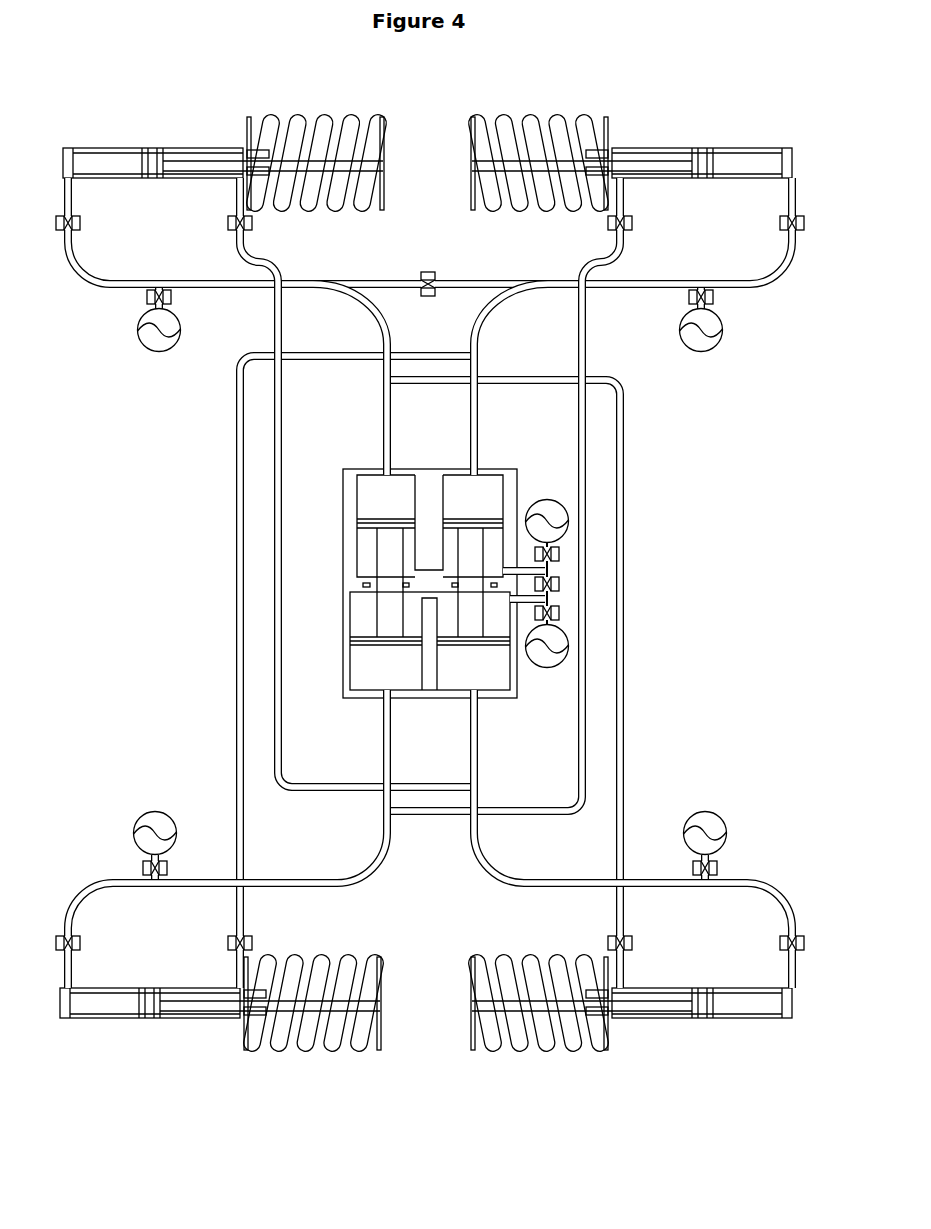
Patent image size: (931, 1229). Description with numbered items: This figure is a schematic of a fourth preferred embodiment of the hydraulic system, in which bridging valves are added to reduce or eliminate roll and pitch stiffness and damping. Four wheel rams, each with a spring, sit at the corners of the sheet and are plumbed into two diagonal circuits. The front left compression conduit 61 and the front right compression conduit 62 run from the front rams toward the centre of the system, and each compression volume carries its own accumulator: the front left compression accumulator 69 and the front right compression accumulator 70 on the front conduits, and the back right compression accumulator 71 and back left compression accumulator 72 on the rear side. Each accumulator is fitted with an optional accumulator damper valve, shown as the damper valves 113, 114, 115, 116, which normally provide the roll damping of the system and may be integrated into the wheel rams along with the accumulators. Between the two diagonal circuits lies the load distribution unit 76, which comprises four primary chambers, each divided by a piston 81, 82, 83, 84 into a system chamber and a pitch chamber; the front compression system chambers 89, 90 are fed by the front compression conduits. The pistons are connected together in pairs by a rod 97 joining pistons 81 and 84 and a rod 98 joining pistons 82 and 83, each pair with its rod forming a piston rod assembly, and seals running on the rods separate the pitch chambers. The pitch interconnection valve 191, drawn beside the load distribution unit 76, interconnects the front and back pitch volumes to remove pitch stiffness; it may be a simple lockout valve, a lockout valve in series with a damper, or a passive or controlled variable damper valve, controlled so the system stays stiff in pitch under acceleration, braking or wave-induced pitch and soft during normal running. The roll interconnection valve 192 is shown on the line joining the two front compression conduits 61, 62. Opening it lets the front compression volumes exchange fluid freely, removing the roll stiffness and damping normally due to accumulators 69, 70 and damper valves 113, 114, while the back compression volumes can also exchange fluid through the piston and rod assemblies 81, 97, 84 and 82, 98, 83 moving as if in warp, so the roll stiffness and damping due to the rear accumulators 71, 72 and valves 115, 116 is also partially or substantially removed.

The front left compression conduit 61 is at (307, 288).
The front right compression conduit 62 is at (552, 290).
The front left compression accumulator 69 is at (147, 350).
The front right compression accumulator 70 is at (717, 347).
The back right compression accumulator 71 is at (713, 815).
The back left compression accumulator 72 is at (147, 815).
The load distribution unit 76 is at (335, 437).
The piston 81 is at (365, 517).
The piston 82 is at (493, 517).
The piston 83 is at (495, 648).
The piston 84 is at (357, 650).
The system chamber 89 is at (378, 483).
The system chamber 90 is at (478, 483).
The rod 97 is at (377, 558).
The rod 98 is at (483, 560).
The accumulator damper valve 113 is at (145, 304).
The accumulator damper valve 114 is at (712, 302).
The accumulator damper valve 115 is at (715, 863).
The accumulator damper valve 116 is at (145, 863).
The pitch interconnection valve 191 is at (560, 583).
The roll interconnection valve 192 is at (432, 273).